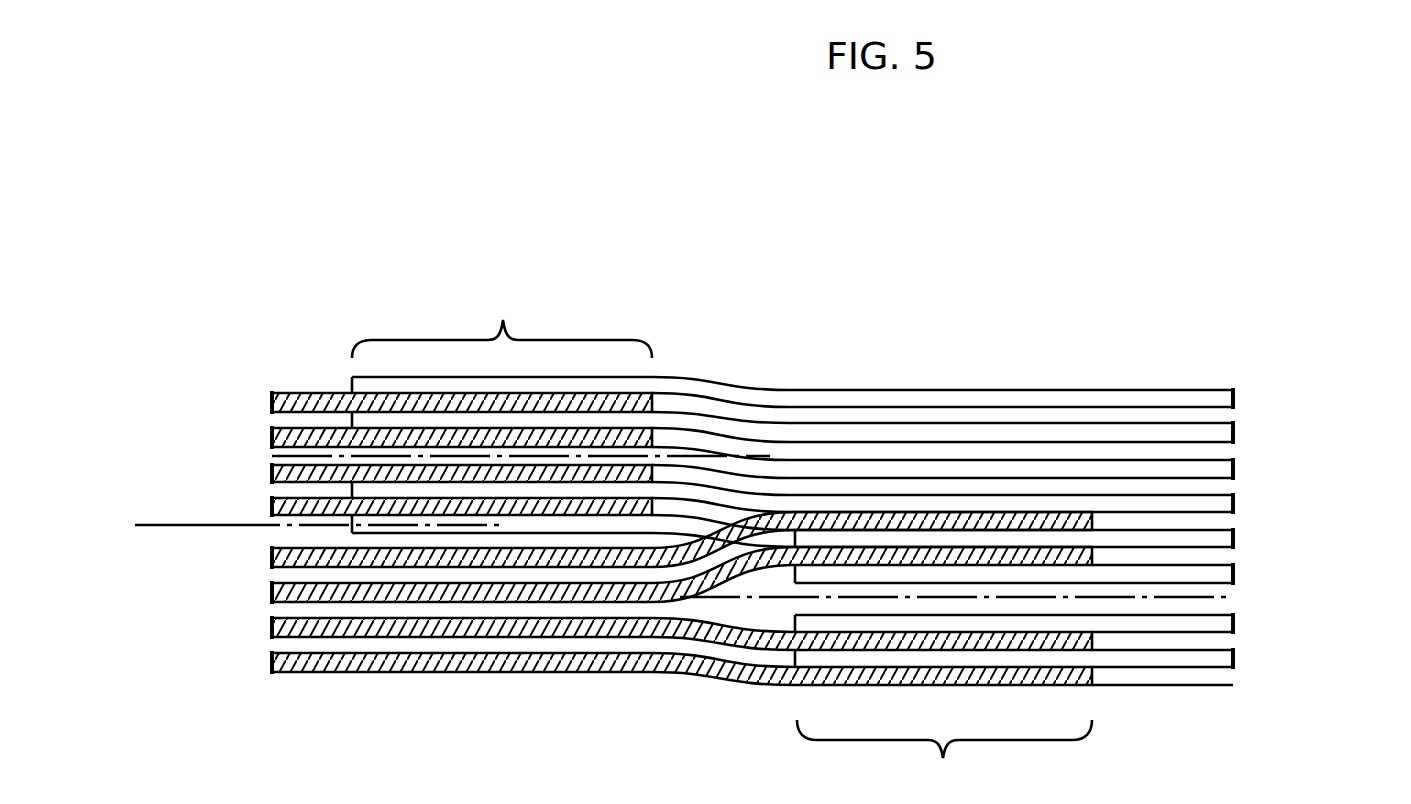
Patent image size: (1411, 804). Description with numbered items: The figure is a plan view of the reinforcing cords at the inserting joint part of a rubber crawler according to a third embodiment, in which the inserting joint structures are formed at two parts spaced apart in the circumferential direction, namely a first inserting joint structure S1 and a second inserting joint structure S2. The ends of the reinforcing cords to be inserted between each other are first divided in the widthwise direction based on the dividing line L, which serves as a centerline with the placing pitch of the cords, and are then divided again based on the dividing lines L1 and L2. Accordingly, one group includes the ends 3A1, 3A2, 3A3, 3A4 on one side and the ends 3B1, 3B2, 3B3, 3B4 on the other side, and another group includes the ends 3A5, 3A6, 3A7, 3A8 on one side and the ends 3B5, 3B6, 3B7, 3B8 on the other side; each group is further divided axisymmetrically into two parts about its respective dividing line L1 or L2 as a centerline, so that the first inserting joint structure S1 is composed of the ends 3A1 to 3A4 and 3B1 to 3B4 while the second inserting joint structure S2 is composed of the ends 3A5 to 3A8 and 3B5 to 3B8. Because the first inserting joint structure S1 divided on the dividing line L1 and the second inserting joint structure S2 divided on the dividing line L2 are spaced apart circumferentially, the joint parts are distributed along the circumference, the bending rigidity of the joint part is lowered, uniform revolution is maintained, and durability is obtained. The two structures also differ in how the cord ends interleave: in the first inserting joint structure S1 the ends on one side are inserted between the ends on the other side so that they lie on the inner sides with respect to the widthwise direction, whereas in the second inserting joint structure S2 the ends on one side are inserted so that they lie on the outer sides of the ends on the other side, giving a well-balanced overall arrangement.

The end of reinforcing cord on one side 3A1 is at (268, 403).
The end of reinforcing cord on one side 3A2 is at (268, 439).
The end of reinforcing cord on one side 3A3 is at (268, 474).
The end of reinforcing cord on one side 3A4 is at (268, 509).
The end of reinforcing cord on one side 3A5 is at (268, 561).
The end of reinforcing cord on one side 3A6 is at (268, 596).
The end of reinforcing cord on one side 3A7 is at (268, 630).
The end of reinforcing cord on one side 3A8 is at (268, 663).
The end of reinforcing cord on the other side 3B1 is at (1236, 397).
The end of reinforcing cord on the other side 3B2 is at (1236, 432).
The end of reinforcing cord on the other side 3B3 is at (1236, 468).
The end of reinforcing cord on the other side 3B4 is at (1236, 503).
The end of reinforcing cord on the other side 3B5 is at (1236, 538).
The end of reinforcing cord on the other side 3B6 is at (1236, 573).
The end of reinforcing cord on the other side 3B7 is at (1236, 623).
The end of reinforcing cord on the other side 3B8 is at (1236, 658).
The dividing line L is at (143, 528).
The dividing line L1 is at (682, 455).
The dividing line L2 is at (1160, 600).
The first inserting joint structure S1 is at (502, 319).
The second inserting joint structure S2 is at (944, 760).